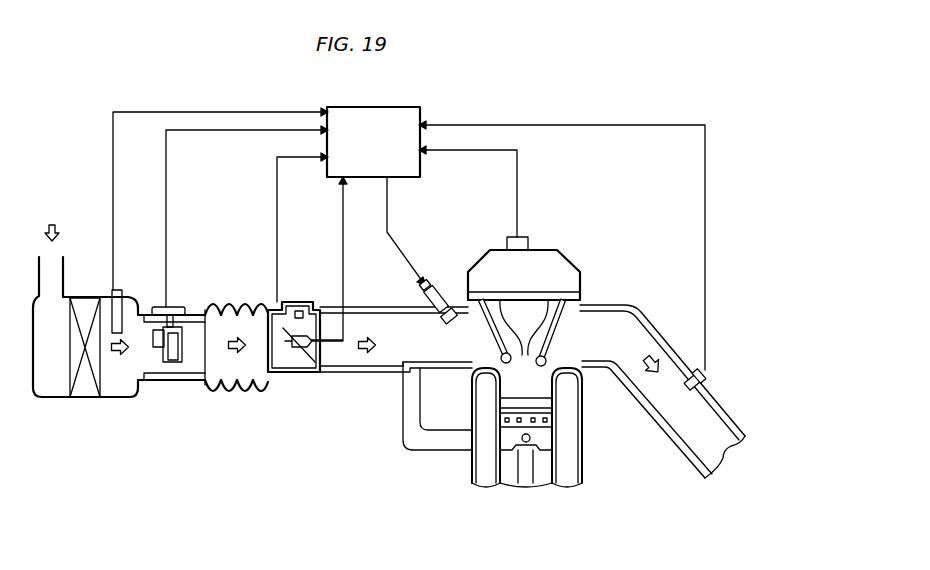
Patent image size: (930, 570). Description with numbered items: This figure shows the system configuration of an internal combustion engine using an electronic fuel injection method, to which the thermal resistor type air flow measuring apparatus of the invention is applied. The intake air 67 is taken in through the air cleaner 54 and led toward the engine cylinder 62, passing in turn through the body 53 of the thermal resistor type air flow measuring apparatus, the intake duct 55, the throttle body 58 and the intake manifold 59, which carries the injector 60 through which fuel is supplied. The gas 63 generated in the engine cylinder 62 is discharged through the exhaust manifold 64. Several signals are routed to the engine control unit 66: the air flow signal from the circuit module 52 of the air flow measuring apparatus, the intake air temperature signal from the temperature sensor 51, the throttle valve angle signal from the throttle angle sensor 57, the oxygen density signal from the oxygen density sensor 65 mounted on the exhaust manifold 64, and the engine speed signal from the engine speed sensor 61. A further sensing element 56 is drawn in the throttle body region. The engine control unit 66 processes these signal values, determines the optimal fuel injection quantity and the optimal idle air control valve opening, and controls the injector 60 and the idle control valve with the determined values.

The intake air temperature sensor 51 is at (110, 288).
The circuit module 52 is at (182, 305).
The body 53 is at (167, 385).
The air cleaner 54 is at (56, 398).
The intake duct 55 is at (230, 385).
The air flow meter housing 56 is at (297, 302).
The throttle angle sensor 57 is at (296, 369).
The throttle body 58 is at (312, 374).
The intake manifold 59 is at (363, 373).
The injector 60 is at (429, 292).
The engine speed sensor 61 is at (528, 238).
The engine cylinder 62 is at (519, 470).
The gas 63 is at (660, 362).
The exhaust manifold 64 is at (599, 307).
The oxygen density sensor 65 is at (709, 378).
The engine control unit 66 is at (385, 107).
The intake air 67 is at (51, 222).